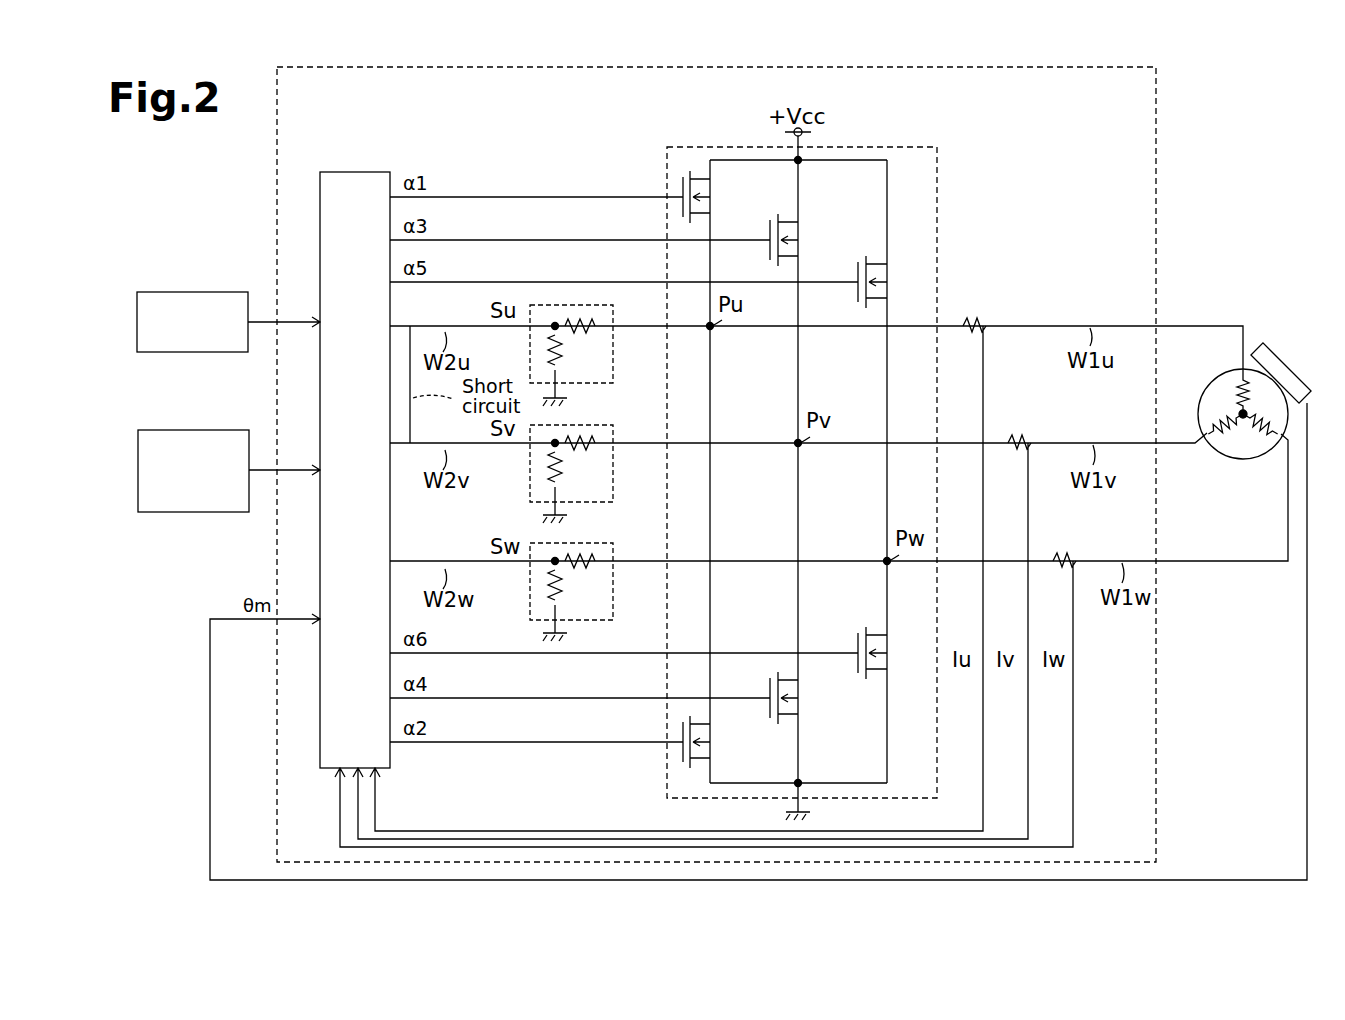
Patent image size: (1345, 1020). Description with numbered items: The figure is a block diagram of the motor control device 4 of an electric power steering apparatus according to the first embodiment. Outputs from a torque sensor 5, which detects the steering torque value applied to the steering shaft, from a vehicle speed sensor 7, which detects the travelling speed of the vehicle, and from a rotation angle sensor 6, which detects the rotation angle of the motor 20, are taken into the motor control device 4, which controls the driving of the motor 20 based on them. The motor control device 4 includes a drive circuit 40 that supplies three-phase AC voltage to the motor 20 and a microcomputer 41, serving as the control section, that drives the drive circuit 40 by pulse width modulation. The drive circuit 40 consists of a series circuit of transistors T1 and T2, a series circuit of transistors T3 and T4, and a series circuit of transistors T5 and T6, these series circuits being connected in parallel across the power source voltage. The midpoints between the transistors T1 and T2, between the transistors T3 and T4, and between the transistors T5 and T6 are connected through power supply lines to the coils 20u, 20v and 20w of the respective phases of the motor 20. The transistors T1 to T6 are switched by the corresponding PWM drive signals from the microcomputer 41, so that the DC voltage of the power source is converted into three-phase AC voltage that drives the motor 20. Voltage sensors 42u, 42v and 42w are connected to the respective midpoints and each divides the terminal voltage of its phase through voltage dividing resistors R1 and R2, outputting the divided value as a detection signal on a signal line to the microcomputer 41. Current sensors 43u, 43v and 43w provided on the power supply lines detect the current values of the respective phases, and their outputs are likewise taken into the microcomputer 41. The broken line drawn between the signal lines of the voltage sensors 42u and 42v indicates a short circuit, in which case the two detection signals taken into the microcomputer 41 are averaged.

The motor control device 4 is at (1157, 100).
The torque sensor 5 is at (193, 292).
The rotation angle sensor 6 is at (1289, 365).
The vehicle speed sensor 7 is at (194, 430).
The motor 20 is at (1225, 413).
The U-phase coil 20u is at (1238, 397).
The V-phase coil 20v is at (1222, 438).
The W-phase coil 20w is at (1258, 442).
The drive circuit 40 is at (937, 160).
The microcomputer 41 is at (358, 172).
The U-phase voltage sensor 42u is at (590, 384).
The V-phase voltage sensor 42v is at (590, 503).
The W-phase voltage sensor 42w is at (590, 621).
The U-phase current sensor 43u is at (971, 316).
The V-phase current sensor 43v is at (1016, 443).
The W-phase current sensor 43w is at (1062, 561).
The transistor T1 is at (680, 191).
The transistor T2 is at (680, 743).
The transistor T3 is at (768, 238).
The transistor T4 is at (768, 695).
The transistor T5 is at (856, 283).
The transistor T6 is at (856, 651).
The voltage dividing resistor R1 is at (600, 330).
The voltage dividing resistor R2 is at (560, 364).